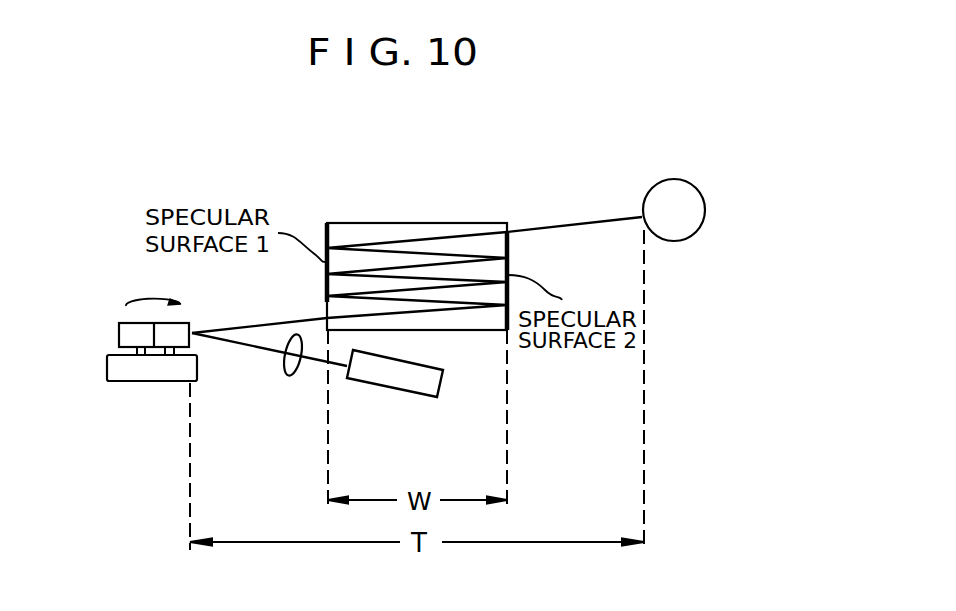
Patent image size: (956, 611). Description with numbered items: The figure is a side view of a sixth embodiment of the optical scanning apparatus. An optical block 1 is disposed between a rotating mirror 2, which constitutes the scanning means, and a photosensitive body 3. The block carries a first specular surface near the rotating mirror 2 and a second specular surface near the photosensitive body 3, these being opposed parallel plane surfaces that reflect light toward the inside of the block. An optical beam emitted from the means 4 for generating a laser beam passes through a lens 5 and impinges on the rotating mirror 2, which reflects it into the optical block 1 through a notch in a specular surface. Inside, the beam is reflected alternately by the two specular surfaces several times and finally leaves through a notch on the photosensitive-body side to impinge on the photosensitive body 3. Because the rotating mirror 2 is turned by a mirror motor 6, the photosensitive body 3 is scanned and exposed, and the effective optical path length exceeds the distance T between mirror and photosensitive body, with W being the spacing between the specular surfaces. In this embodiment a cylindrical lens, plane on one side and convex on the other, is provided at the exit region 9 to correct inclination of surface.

The optical block 1 is at (432, 222).
The rotating mirror 2 is at (118, 333).
The photosensitive body 3 is at (686, 242).
The means for generating laser beam 4 is at (433, 397).
The lens 5 is at (290, 377).
The mirror motor 6 is at (118, 382).
The light exit portion 9 is at (508, 252).